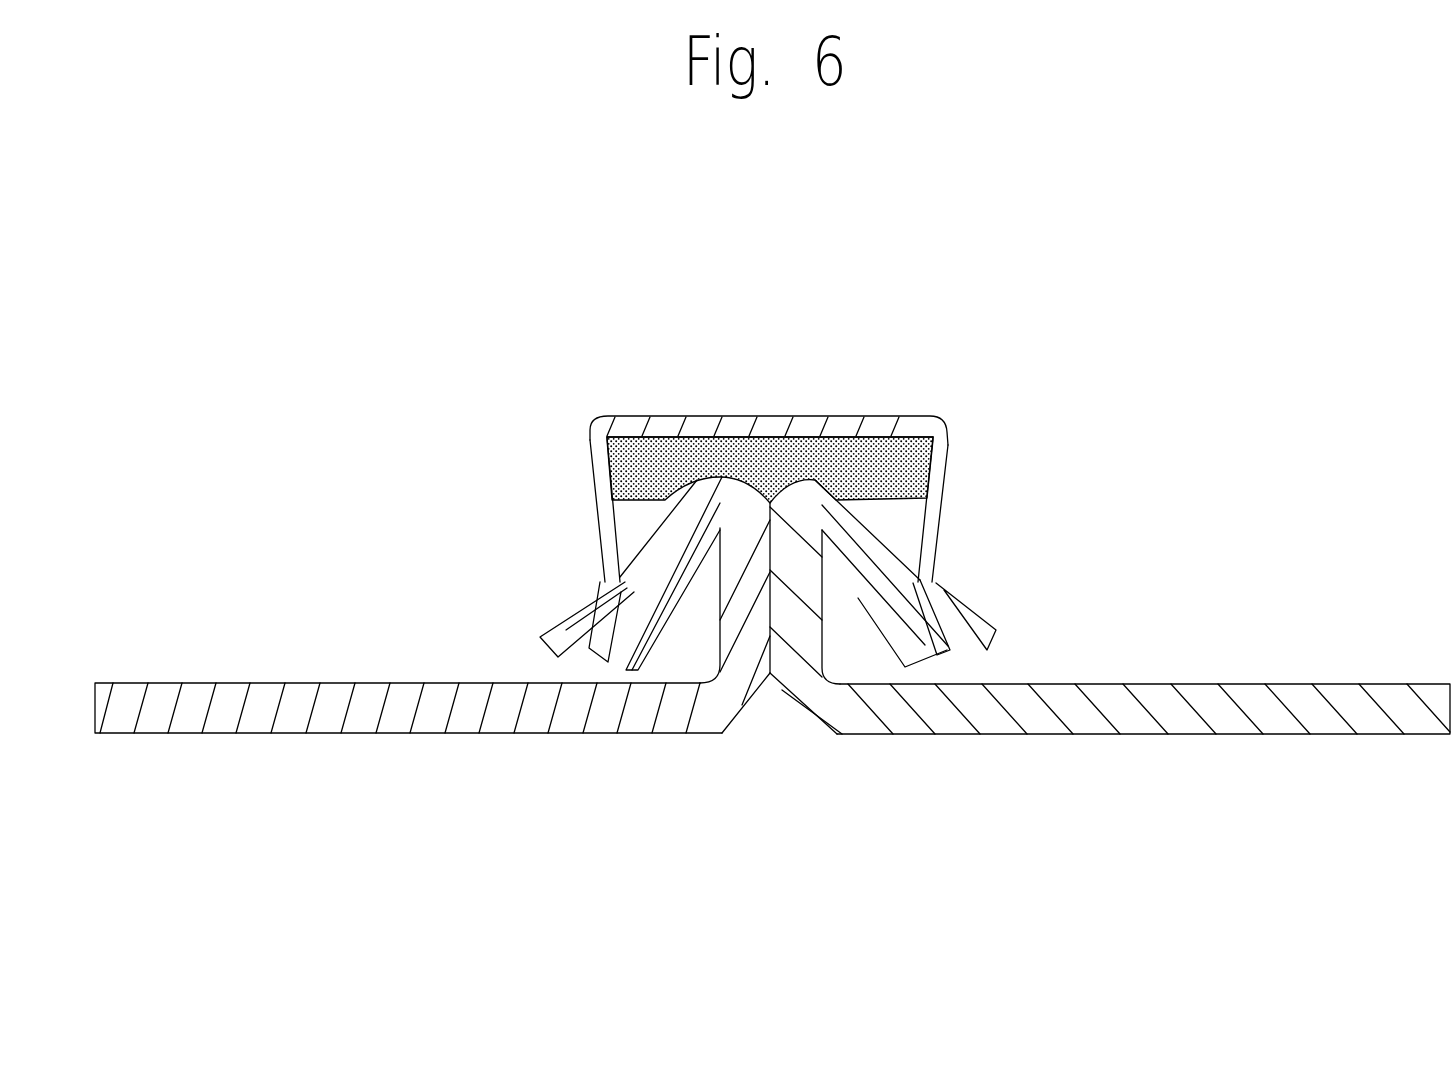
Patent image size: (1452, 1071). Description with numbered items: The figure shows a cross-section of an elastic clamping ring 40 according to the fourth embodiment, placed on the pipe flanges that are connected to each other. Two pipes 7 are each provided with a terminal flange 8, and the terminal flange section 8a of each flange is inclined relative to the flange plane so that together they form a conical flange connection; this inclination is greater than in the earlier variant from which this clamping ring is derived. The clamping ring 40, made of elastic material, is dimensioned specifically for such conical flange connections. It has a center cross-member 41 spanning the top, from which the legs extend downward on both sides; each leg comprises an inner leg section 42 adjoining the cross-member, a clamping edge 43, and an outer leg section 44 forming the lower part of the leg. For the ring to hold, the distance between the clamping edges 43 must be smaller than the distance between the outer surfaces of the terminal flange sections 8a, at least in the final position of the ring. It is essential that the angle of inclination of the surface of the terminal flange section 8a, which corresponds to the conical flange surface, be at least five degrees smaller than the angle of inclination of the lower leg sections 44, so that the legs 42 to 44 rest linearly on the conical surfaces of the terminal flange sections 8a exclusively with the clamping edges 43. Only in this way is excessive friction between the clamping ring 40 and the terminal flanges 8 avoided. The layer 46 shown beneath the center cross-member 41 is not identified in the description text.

The pipe 7 is at (772, 759).
The terminal flange 8 is at (758, 672).
The terminal flange section 8a is at (755, 621).
The clamping ring 40 is at (752, 458).
The center cross-member 41 is at (769, 349).
The inner leg section 42 is at (688, 509).
The clamping edge 43 is at (747, 584).
The outer leg section 44 is at (761, 616).
The foam layer 46 is at (770, 378).